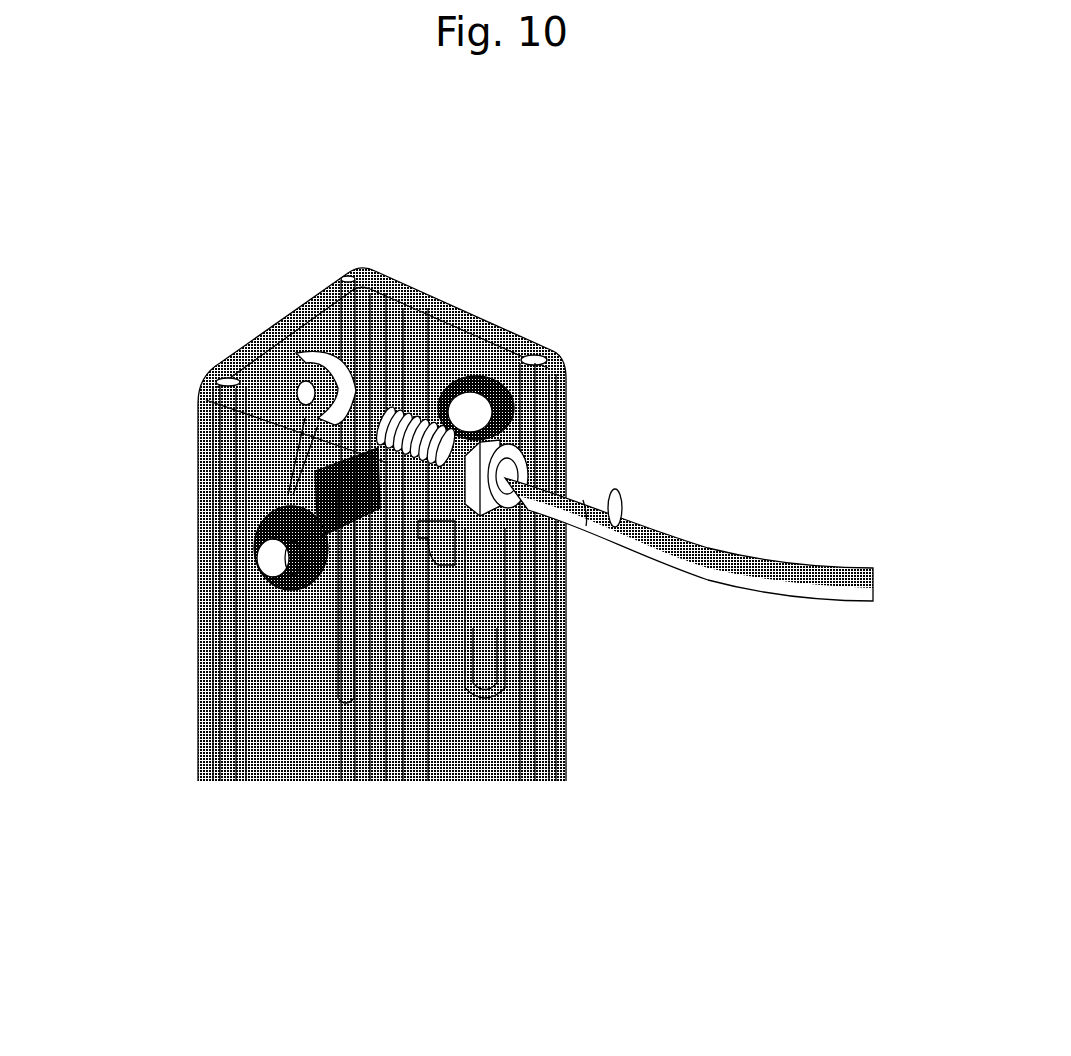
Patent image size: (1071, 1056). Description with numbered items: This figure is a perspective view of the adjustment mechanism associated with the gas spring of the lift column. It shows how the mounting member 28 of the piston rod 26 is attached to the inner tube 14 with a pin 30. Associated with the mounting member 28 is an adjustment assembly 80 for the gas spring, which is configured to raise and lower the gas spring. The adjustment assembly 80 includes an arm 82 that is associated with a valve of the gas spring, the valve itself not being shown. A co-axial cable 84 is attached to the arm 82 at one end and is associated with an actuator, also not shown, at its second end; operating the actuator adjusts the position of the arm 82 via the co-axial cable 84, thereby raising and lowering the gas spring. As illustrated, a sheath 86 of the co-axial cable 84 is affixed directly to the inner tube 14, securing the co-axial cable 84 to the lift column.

The inner tube 14 is at (530, 673).
The piston rod 26 is at (387, 713).
The mounting member 28 is at (338, 618).
The pin 30 is at (265, 563).
The adjustment assembly 80 is at (470, 412).
The arm 82 is at (320, 345).
The co-axial cable 84 is at (357, 403).
The sheath 86 is at (490, 473).